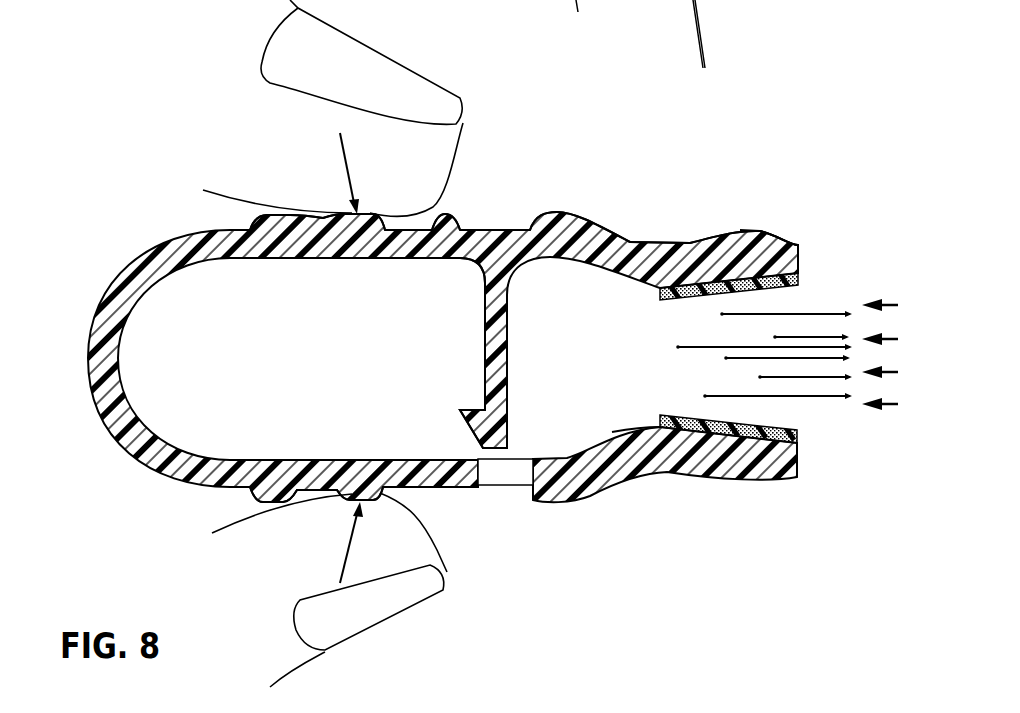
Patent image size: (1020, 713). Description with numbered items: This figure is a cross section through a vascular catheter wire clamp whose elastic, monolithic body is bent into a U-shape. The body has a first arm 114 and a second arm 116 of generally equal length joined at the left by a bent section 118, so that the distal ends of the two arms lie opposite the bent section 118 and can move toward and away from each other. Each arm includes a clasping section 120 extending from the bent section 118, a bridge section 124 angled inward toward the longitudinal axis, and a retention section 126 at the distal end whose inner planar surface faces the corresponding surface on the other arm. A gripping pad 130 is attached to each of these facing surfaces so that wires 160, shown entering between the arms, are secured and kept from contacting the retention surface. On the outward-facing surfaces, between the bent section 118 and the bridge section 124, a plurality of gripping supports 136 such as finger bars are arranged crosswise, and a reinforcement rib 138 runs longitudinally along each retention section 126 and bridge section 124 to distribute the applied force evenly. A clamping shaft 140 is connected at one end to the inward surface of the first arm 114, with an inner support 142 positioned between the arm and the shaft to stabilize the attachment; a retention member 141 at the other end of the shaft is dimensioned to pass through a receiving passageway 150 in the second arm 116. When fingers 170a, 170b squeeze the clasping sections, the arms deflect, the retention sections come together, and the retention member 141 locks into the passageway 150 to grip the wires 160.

The first arm 114 is at (700, 238).
The second arm 116 is at (736, 483).
The bent section 118 is at (121, 366).
The clasping section 120 is at (213, 224).
The bridge section 124 is at (578, 212).
The retention section 126 is at (744, 231).
The gripping pad 130 is at (666, 300).
The gripping supports 136 is at (347, 210).
The reinforcement rib 138 is at (625, 233).
The clamping shaft 140 is at (508, 347).
The retention member 141 is at (471, 437).
The inner support 142 is at (468, 266).
The receiving passageway 150 is at (500, 487).
The wires 160 is at (824, 312).
The finger 170a is at (470, 125).
The finger 170b is at (452, 576).